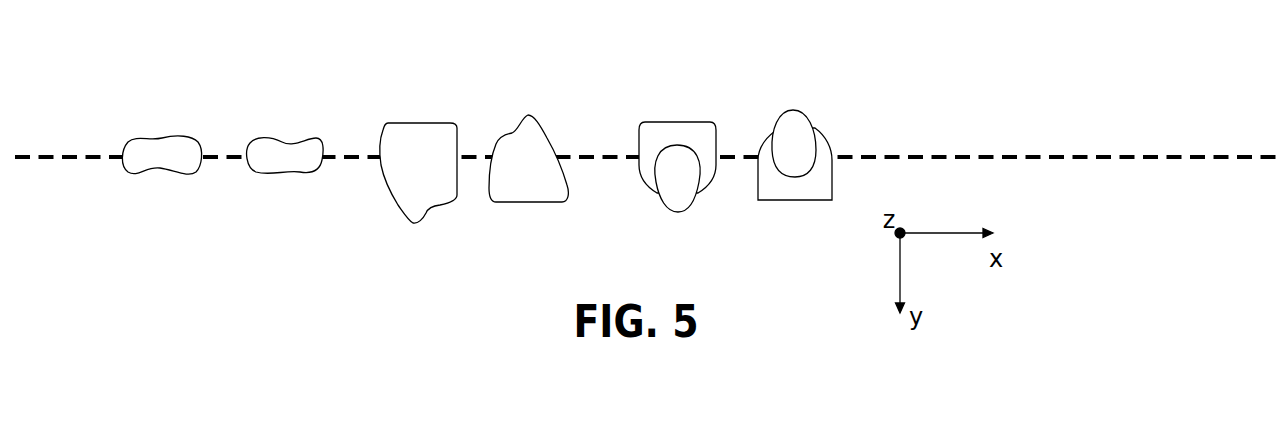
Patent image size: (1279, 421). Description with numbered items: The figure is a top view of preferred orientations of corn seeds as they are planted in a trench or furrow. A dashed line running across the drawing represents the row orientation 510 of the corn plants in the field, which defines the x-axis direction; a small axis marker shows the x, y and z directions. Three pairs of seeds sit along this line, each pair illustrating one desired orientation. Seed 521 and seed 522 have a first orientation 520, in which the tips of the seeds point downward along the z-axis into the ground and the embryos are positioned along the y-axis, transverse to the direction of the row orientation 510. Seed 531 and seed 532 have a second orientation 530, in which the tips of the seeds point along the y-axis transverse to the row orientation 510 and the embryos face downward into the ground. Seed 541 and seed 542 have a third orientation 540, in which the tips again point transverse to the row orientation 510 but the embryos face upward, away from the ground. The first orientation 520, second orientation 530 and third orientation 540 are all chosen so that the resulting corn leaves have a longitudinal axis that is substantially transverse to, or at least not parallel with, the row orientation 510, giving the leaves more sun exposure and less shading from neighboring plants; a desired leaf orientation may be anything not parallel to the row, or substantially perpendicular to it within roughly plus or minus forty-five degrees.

The row orientation 510 is at (1012, 155).
The first orientation 520 is at (222, 108).
The seed 521 is at (142, 165).
The seed 522 is at (265, 165).
The second orientation 530 is at (474, 211).
The seed 531 is at (402, 175).
The seed 532 is at (547, 175).
The third orientation 540 is at (735, 117).
The seed 541 is at (682, 146).
The seed 542 is at (778, 200).